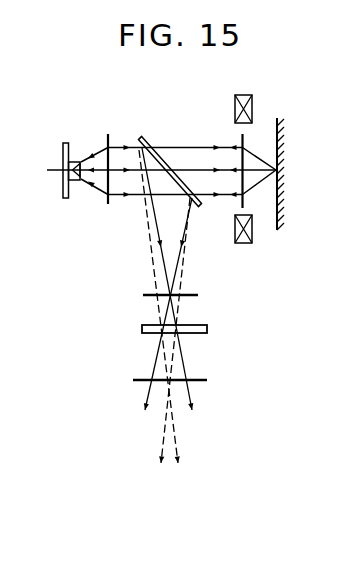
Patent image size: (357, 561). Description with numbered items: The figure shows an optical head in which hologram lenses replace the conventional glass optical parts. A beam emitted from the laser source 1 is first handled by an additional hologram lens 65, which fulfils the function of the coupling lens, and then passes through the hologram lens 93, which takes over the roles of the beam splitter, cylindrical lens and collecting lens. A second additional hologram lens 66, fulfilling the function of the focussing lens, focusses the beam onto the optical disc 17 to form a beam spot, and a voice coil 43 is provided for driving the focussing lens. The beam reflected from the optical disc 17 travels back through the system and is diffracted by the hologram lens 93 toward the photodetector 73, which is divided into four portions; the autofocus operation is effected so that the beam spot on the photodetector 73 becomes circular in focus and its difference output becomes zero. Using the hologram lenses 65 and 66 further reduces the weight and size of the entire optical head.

The laser source 1 is at (65, 199).
The additional hologram lens 65 is at (108, 134).
The hologram lens 93 is at (141, 139).
The additional hologram lens 66 is at (242, 136).
The voice coil 43 is at (252, 107).
The optical disc 17 is at (277, 118).
The photodetector 73 is at (207, 331).